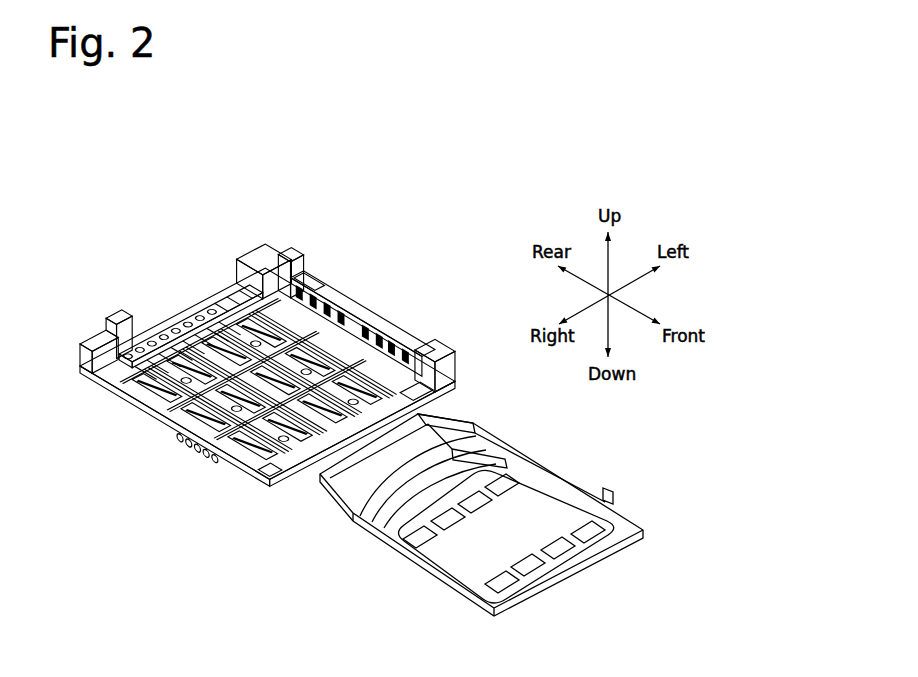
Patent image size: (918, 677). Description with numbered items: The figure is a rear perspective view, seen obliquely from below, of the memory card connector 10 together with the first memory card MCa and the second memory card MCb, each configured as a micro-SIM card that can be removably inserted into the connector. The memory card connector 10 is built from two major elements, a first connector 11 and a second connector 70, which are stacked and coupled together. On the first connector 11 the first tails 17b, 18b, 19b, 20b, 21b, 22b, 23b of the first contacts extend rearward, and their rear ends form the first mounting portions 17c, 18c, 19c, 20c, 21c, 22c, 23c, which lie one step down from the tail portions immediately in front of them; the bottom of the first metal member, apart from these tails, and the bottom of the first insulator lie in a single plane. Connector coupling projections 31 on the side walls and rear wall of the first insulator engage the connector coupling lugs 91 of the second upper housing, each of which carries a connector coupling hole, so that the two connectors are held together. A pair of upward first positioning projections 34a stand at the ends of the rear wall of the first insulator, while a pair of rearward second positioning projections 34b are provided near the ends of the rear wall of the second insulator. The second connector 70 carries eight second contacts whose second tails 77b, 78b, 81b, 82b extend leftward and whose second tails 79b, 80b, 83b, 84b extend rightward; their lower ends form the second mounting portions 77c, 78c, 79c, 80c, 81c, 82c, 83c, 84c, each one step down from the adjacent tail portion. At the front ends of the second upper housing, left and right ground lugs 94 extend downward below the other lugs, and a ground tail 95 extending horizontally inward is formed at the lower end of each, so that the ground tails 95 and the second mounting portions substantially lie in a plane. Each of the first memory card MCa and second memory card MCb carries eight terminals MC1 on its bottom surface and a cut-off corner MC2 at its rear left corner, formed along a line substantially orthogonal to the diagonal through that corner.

The memory card connector 10 is at (366, 234).
The first connector 11 is at (100, 397).
The first tail 17b is at (251, 276).
The first mounting portion 17c is at (200, 318).
The first tail 18b is at (239, 260).
The first mounting portion 18c is at (176, 331).
The first tail 19b is at (227, 244).
The first mounting portion 19c is at (152, 344).
The first tail 20b is at (215, 227).
The first mounting portion 20c is at (128, 356).
The first tail 21b is at (245, 268).
The first mounting portion 21c is at (188, 325).
The first tail 22b is at (233, 252).
The first mounting portion 22c is at (164, 337).
The first tail 23b is at (221, 236).
The first mounting portion 23c is at (140, 350).
The connector coupling projection 31 is at (332, 285).
The first positioning projection 34a is at (90, 343).
The second positioning projection 34b is at (104, 326).
The second connector 70 is at (111, 309).
The second tail 77b is at (449, 336).
The second mounting portion 77c is at (408, 350).
The second tail 78b is at (442, 320).
The second mounting portion 78c is at (396, 340).
The second tail 79b is at (136, 492).
The second mounting portion 79c is at (206, 458).
The second tail 80b is at (140, 507).
The second mounting portion 80c is at (215, 463).
The second tail 81b is at (429, 289).
The second mounting portion 81c is at (372, 318).
The second tail 82b is at (436, 305).
The second mounting portion 82c is at (384, 328).
The second tail 83b is at (131, 477).
The second mounting portion 83c is at (197, 453).
The second tail 84b is at (127, 460).
The second mounting portion 84c is at (188, 448).
The connector coupling lug 91 is at (325, 288).
The ground lug 94 is at (440, 372).
The ground tail 95 is at (438, 392).
The terminal MC1 is at (470, 437).
The cut-off corner MC2 is at (448, 418).
The first memory card MCa is at (603, 497).
The second memory card MCb is at (557, 480).